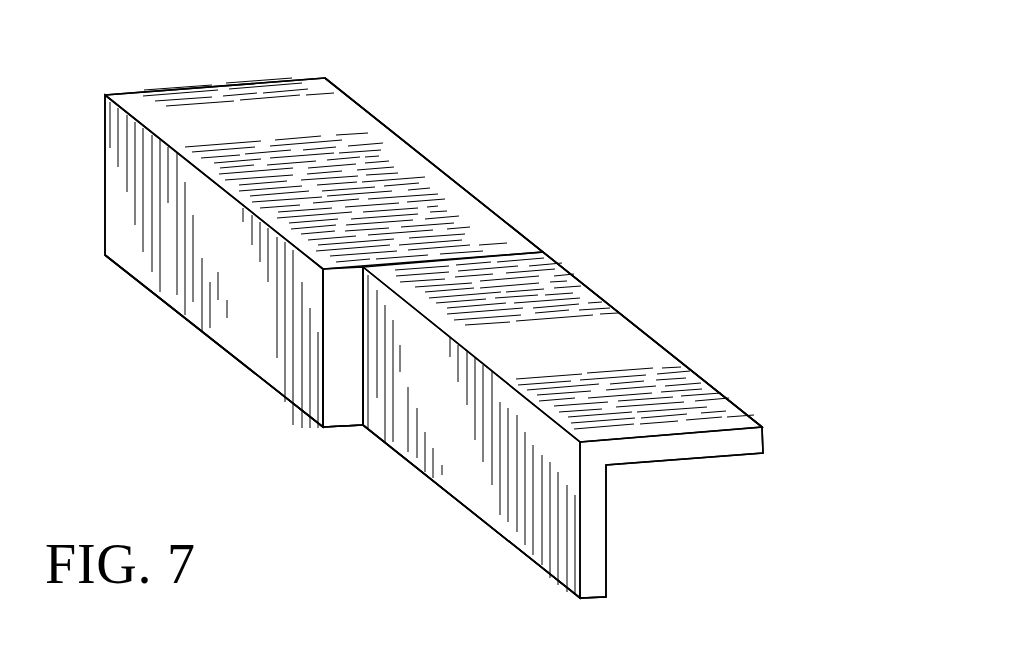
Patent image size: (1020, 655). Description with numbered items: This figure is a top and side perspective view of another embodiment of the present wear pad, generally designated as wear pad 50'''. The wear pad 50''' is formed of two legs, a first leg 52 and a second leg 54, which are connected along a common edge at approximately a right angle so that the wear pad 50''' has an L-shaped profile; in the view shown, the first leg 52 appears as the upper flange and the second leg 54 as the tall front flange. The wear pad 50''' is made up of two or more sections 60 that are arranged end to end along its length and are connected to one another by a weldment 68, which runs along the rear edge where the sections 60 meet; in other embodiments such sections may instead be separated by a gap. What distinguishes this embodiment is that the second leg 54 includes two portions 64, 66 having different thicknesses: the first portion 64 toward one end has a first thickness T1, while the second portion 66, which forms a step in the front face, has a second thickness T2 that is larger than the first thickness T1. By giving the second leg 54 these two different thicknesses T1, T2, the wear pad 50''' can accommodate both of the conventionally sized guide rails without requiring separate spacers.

The wear pad 50''' is at (434, 334).
The first leg 52 is at (413, 175).
The second leg 54 is at (243, 308).
The sections 60 is at (335, 115).
The first portion 64 is at (563, 548).
The second portion 66 is at (323, 368).
The weldment 68 is at (543, 252).
The first thickness T1 is at (595, 527).
The second thickness T2 is at (345, 407).